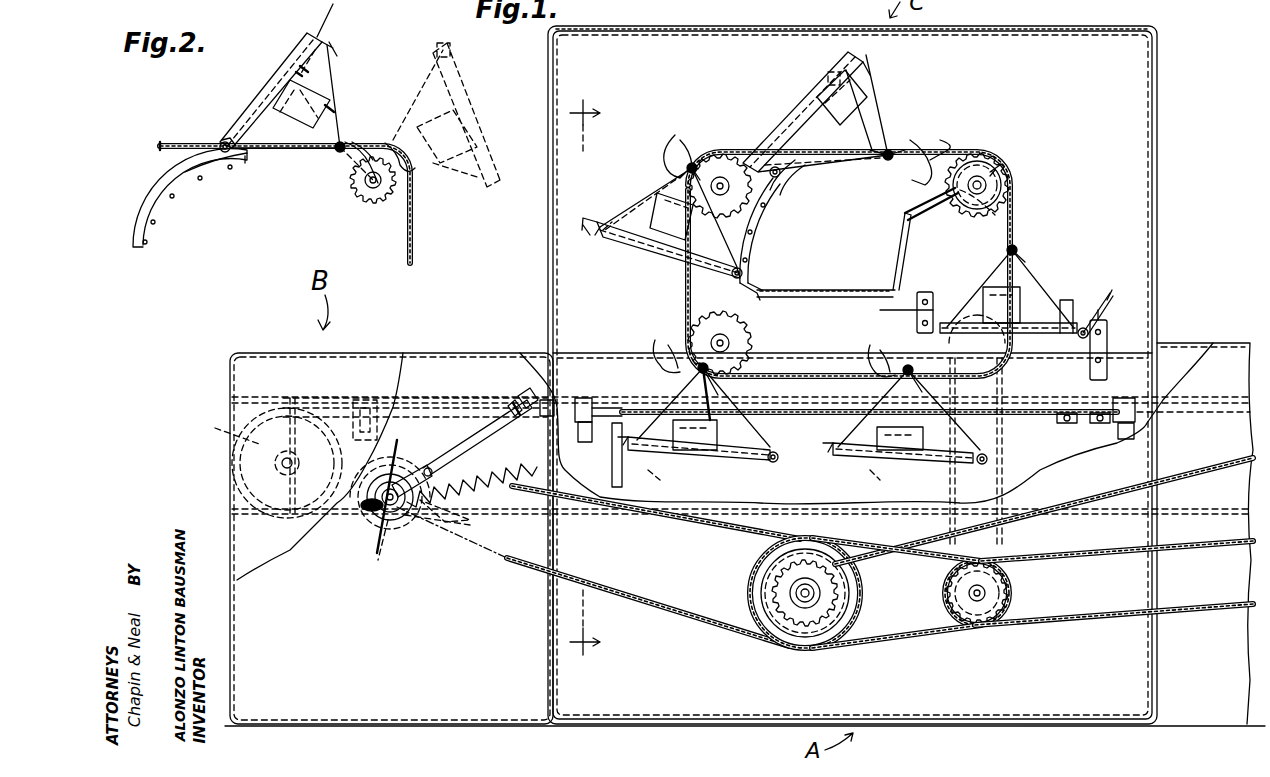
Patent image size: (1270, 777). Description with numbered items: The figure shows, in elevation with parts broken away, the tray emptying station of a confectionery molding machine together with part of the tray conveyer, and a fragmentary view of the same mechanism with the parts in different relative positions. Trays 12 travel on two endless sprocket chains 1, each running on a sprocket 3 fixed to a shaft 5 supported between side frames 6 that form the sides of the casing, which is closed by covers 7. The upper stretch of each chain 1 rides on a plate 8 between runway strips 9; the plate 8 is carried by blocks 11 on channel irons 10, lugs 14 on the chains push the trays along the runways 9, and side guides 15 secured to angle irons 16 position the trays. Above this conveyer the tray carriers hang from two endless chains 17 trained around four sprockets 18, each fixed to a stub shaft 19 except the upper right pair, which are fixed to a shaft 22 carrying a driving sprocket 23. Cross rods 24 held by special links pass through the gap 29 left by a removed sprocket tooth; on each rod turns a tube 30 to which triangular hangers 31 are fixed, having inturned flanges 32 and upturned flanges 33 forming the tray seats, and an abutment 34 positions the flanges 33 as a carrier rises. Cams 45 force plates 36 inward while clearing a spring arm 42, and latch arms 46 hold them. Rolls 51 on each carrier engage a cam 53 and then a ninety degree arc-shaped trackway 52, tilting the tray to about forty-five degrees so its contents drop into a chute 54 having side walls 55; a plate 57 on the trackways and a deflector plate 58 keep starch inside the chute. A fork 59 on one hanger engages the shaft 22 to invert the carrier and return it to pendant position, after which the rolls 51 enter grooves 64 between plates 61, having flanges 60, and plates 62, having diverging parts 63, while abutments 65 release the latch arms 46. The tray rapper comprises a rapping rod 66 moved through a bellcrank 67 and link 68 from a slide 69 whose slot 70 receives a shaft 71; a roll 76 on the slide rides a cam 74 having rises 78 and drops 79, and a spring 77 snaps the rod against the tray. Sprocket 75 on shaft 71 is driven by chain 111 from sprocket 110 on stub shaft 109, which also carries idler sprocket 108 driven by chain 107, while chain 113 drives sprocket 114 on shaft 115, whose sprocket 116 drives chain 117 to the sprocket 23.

In FIG. 1, the endless sprocket chains 1 is at (330, 397).
In FIG. 1, the sprocket 3 is at (399, 383).
In FIG. 1, the shaft 5 is at (275, 463).
In FIG. 1, the side frames 6 is at (745, 534).
In FIG. 1, the covers 7 is at (546, 213).
In FIG. 1, the plate 8 is at (310, 445).
In FIG. 1, the runway strips 9 is at (760, 400).
In FIG. 1, the channel irons 10 is at (575, 440).
In FIG. 1, the block 11 is at (560, 418).
In FIG. 1, the trays 12 is at (1225, 388).
In FIG. 1, the lugs 14 is at (452, 398).
In FIG. 1, the side guides 15 is at (288, 412).
In FIG. 1, the angle irons 16 is at (370, 398).
In FIG. 2, the endless sprocket chains 17 is at (170, 144).
In FIG. 1, the endless sprocket chains 17 is at (686, 295).
In FIG. 2, the sprockets 18 is at (352, 182).
In FIG. 1, the sprockets 18 is at (722, 180).
In FIG. 1, the stub shaft 19 is at (725, 180).
In FIG. 2, the shaft 22 is at (368, 190).
In FIG. 1, the shaft 22 is at (980, 183).
In FIG. 1, the driving sprocket 23 is at (1012, 183).
In FIG. 1, the cross rods 24 is at (885, 160).
In FIG. 1, the removed tooth 29 is at (962, 198).
In FIG. 1, the tube 30 is at (892, 160).
In FIG. 2, the hangers 31 is at (278, 150).
In FIG. 1, the hangers 31 is at (845, 52).
In FIG. 1, the inturned flanges 32 is at (826, 74).
In FIG. 1, the flanges 33 is at (598, 230).
In FIG. 2, the abutment 34 is at (320, 20).
In FIG. 1, the abutment 34 is at (585, 240).
In FIG. 2, the plates 36 is at (303, 97).
In FIG. 1, the plates 36 is at (685, 225).
In FIG. 1, the spring arm 42 is at (875, 140).
In FIG. 1, the cams 45 is at (655, 194).
In FIG. 2, the latch arms 46 is at (338, 50).
In FIG. 1, the latch arms 46 is at (872, 58).
In FIG. 2, the rolls 51 is at (224, 140).
In FIG. 1, the rolls 51 is at (775, 166).
In FIG. 2, the trackways 52 is at (190, 178).
In FIG. 1, the trackways 52 is at (800, 172).
In FIG. 1, the cam 53 is at (763, 290).
In FIG. 1, the chute 54 is at (878, 292).
In FIG. 1, the side walls 55 is at (900, 270).
In FIG. 2, the plate 57 is at (150, 195).
In FIG. 1, the plate 57 is at (778, 200).
In FIG. 1, the deflector plate 58 is at (906, 212).
In FIG. 2, the fork 59 is at (360, 140).
In FIG. 1, the fork 59 is at (676, 140).
In FIG. 1, the flanges 60 is at (1066, 300).
In FIG. 1, the vertical plates 61 is at (1090, 295).
In FIG. 1, the vertical plates 62 is at (1108, 370).
In FIG. 1, the outwardly diverging part 63 is at (1112, 295).
In FIG. 1, the grooves 64 is at (1105, 313).
In FIG. 1, the abutments 65 is at (896, 307).
In FIG. 1, the rapping rod 66 is at (522, 395).
In FIG. 1, the bellcrank 67 is at (510, 404).
In FIG. 1, the link 68 is at (508, 425).
In FIG. 1, the slide 69 is at (432, 466).
In FIG. 1, the longitudinal slot 70 is at (378, 480).
In FIG. 1, the shaft 71 is at (375, 495).
In FIG. 1, the cam 74 is at (424, 465).
In FIG. 1, the driving sprocket 75 is at (442, 541).
In FIG. 1, the roll 76 is at (368, 515).
In FIG. 1, the spring 77 is at (490, 487).
In FIG. 1, the rises 78 is at (373, 553).
In FIG. 1, the sharp radial drops 79 is at (440, 520).
In FIG. 1, the chain 107 is at (890, 556).
In FIG. 1, the idler sprocket 108 is at (845, 590).
In FIG. 1, the stub shaft 109 is at (790, 593).
In FIG. 1, the sprocket 110 is at (770, 572).
In FIG. 1, the chain 111 is at (518, 563).
In FIG. 1, the chain 113 is at (1100, 625).
In FIG. 1, the sprocket 114 is at (975, 625).
In FIG. 1, the shaft 115 is at (960, 618).
In FIG. 1, the sprocket 116 is at (1000, 595).
In FIG. 1, the chain 117 is at (1020, 552).